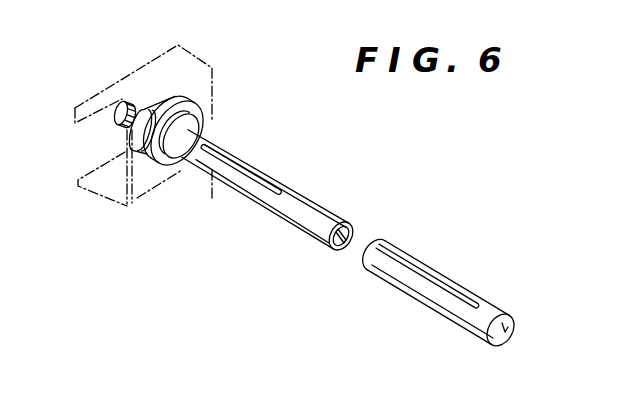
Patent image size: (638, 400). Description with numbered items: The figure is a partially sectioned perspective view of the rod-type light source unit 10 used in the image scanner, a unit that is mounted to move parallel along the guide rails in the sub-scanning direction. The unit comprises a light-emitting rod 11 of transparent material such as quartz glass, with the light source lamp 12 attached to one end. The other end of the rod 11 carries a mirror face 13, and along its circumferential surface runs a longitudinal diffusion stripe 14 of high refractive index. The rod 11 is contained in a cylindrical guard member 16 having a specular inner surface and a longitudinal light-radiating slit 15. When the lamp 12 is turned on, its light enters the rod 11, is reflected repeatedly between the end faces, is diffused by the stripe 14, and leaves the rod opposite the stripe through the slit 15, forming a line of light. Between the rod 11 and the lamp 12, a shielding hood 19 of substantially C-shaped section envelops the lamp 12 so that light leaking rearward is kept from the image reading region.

The light source unit 10 is at (214, 205).
The light-emitting rod 11 is at (355, 227).
The light source lamp 12 is at (153, 105).
The mirror face 13 is at (493, 345).
The diffusion stripe 14 is at (350, 246).
The light-radiating slit 15 is at (279, 192).
The cylindrical guard member 16 is at (300, 220).
The shielding hood 19 is at (197, 58).